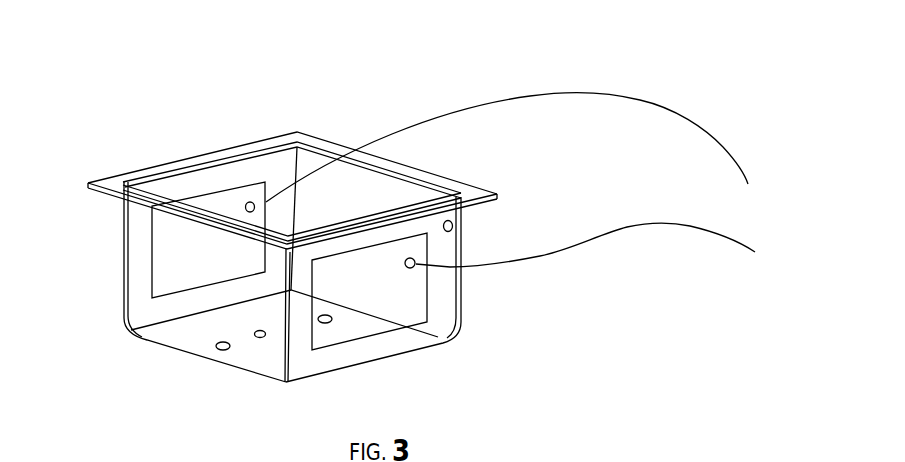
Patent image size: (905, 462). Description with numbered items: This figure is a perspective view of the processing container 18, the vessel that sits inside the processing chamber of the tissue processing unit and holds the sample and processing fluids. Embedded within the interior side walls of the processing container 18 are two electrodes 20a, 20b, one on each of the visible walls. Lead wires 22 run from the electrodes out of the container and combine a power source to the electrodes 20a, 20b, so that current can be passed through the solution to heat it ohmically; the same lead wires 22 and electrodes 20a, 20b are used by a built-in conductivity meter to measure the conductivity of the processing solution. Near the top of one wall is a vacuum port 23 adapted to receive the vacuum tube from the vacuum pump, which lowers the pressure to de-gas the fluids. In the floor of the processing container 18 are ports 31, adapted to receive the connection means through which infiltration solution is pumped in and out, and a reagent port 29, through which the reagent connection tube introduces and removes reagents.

The processing container 18 is at (127, 264).
The electrode 20a is at (236, 194).
The electrode 20b is at (380, 260).
The lead wires 22 is at (748, 184).
The vacuum port 23 is at (453, 226).
The reagent port 29 is at (258, 338).
The ports 31 is at (318, 320).